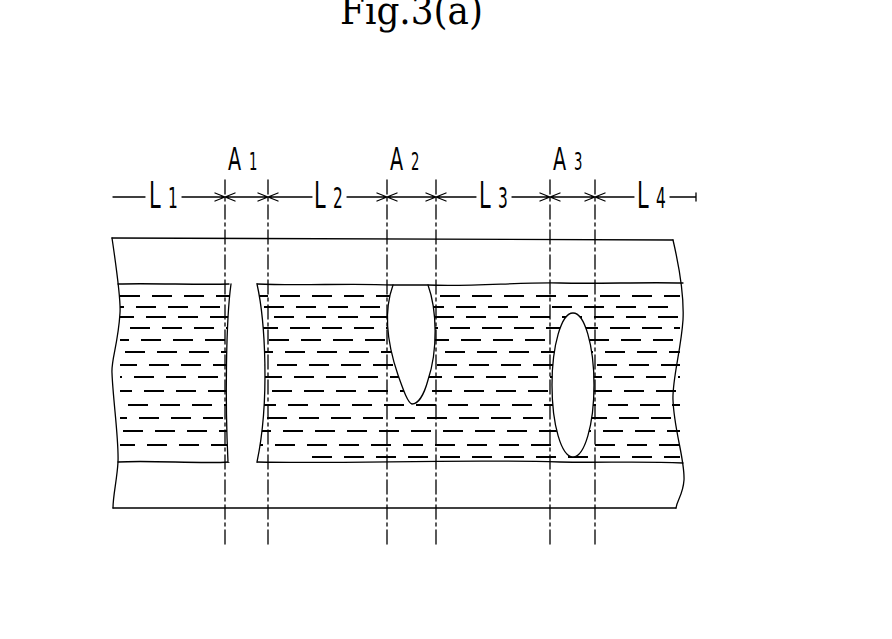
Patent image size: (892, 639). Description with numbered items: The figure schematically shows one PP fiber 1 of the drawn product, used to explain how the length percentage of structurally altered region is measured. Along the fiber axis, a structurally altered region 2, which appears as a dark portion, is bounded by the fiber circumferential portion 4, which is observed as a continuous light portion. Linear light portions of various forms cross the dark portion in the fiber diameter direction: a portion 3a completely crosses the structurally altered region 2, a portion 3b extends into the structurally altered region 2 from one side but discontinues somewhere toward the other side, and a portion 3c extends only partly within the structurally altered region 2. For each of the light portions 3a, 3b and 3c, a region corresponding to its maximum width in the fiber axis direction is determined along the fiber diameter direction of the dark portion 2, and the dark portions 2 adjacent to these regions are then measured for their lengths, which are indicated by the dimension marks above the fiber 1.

The PP fiber 1 is at (710, 172).
The structurally altered region 2 is at (133, 370).
The light portion completely crossing the structurally altered region 3a is at (248, 408).
The light portion discontinuing toward the other side 3b is at (413, 370).
The light portion extending partly in the structurally altered region 3c is at (577, 428).
The fiber circumferential portion 4 is at (130, 262).